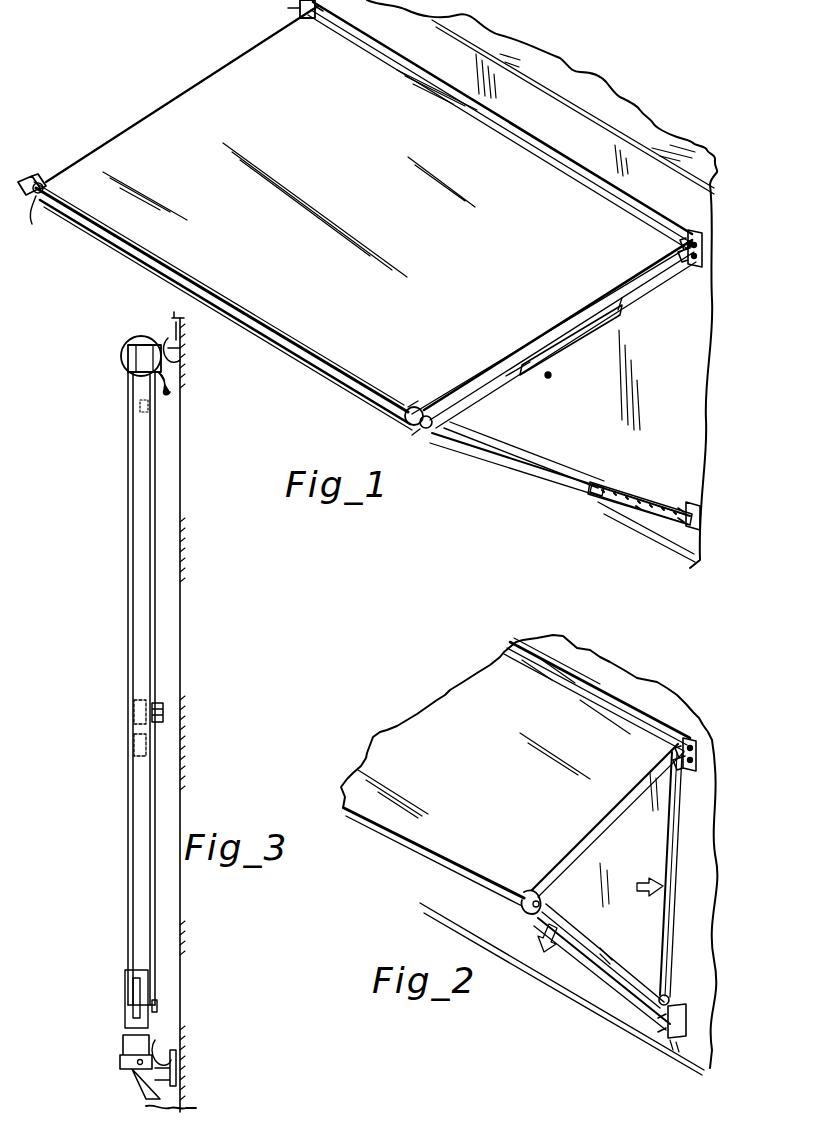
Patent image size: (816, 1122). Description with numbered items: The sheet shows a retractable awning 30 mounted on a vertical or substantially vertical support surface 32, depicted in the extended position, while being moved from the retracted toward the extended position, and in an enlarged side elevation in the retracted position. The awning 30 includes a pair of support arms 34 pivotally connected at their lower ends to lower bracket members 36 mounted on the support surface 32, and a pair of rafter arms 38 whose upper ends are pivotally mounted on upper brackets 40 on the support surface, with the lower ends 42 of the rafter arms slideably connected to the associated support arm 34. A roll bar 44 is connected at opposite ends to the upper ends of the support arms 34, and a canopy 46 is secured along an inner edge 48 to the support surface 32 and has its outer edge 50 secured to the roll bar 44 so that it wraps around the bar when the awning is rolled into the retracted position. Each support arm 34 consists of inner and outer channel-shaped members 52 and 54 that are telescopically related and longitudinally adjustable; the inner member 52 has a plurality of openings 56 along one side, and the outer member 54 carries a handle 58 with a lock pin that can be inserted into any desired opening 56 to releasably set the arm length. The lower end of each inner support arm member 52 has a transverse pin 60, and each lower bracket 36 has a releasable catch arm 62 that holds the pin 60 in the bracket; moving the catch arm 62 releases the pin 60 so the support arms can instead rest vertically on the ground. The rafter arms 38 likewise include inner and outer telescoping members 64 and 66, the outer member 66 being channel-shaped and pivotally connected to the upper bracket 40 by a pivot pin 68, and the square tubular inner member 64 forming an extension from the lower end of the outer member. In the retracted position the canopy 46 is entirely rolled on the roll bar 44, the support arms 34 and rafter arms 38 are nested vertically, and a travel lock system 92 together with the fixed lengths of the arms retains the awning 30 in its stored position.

In FIG. 1, the retractable awning 30 is at (172, 63).
In FIG. 3, the retractable awning 30 is at (119, 484).
In FIG. 2, the retractable awning 30 is at (427, 682).
In FIG. 1, the support surface 32 is at (664, 344).
In FIG. 3, the support surface 32 is at (176, 814).
In FIG. 2, the support surface 32 is at (687, 917).
In FIG. 1, the support arm 34 is at (48, 180).
In FIG. 3, the support arm 34 is at (124, 640).
In FIG. 2, the support arm 34 is at (604, 998).
In FIG. 1, the lower bracket member 36 is at (688, 494).
In FIG. 3, the lower bracket member 36 is at (176, 1066).
In FIG. 2, the lower bracket member 36 is at (678, 1030).
In FIG. 1, the rafter arm 38 is at (616, 288).
In FIG. 2, the rafter arm 38 is at (676, 832).
In FIG. 1, the upper bracket 40 is at (298, 12).
In FIG. 3, the upper bracket 40 is at (186, 346).
In FIG. 2, the upper bracket 40 is at (672, 738).
In FIG. 1, the lower end of rafter arm 42 is at (432, 408).
In FIG. 2, the lower end of rafter arm 42 is at (664, 992).
In FIG. 1, the roll bar 44 is at (38, 194).
In FIG. 2, the roll bar 44 is at (520, 910).
In FIG. 1, the canopy 46 is at (378, 200).
In FIG. 2, the canopy 46 is at (506, 810).
In FIG. 1, the inner edge of canopy 48 is at (513, 121).
In FIG. 2, the inner edge of canopy 48 is at (610, 694).
In FIG. 1, the outer edge of canopy 50 is at (390, 412).
In FIG. 1, the inner channel-shaped member 52 is at (638, 494).
In FIG. 1, the outer channel-shaped member 54 is at (534, 458).
In FIG. 3, the outer channel-shaped member 54 is at (140, 774).
In FIG. 2, the outer channel-shaped member 54 is at (566, 932).
In FIG. 1, the openings 56 is at (646, 504).
In FIG. 1, the handle 58 is at (592, 496).
In FIG. 3, the transverse pin 60 is at (128, 1066).
In FIG. 3, the catch arm 62 is at (158, 1044).
In FIG. 1, the inner telescoping member 64 is at (514, 370).
In FIG. 1, the outer telescoping member 66 is at (576, 328).
In FIG. 2, the outer telescoping member 66 is at (676, 855).
In FIG. 1, the pivot pin 68 is at (682, 242).
In FIG. 3, the travel lock system 92 is at (160, 694).